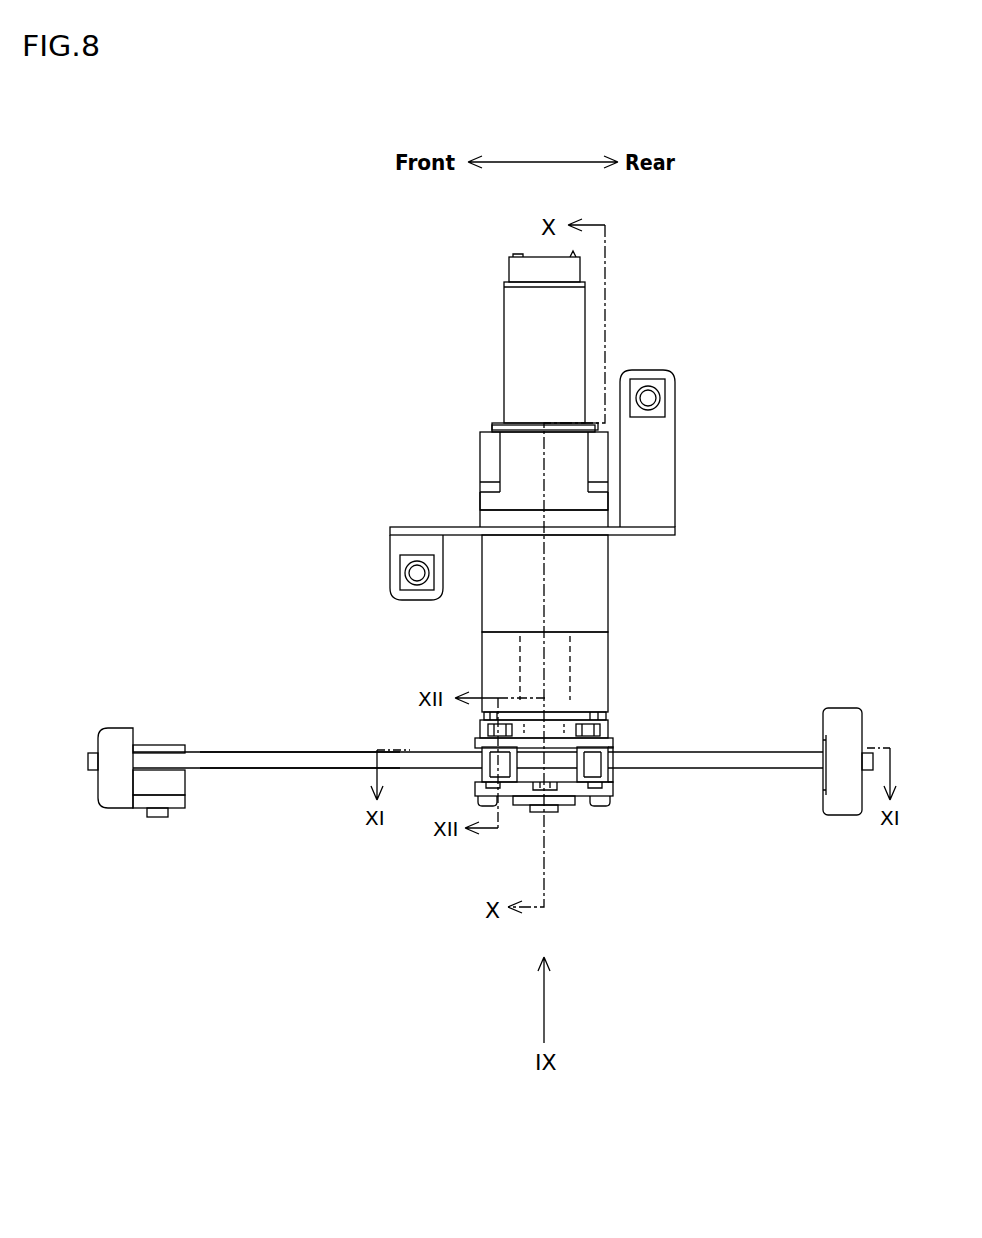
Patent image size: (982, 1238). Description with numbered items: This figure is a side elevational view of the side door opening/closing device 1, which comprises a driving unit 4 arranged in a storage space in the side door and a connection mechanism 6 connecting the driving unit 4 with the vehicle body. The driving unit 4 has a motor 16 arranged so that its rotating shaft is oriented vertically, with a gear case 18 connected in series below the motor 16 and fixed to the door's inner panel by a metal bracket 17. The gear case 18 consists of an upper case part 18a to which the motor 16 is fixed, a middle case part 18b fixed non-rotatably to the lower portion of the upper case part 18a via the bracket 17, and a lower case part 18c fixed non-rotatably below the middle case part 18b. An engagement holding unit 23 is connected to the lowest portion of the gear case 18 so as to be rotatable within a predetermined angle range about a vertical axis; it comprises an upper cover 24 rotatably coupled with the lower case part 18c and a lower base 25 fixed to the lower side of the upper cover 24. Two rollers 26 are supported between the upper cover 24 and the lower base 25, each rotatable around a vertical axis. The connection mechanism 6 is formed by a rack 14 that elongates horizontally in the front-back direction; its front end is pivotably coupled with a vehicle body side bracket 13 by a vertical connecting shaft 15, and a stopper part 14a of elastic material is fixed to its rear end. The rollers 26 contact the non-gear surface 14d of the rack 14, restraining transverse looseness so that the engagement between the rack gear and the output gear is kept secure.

The side door opening/closing device 1 is at (723, 635).
The driving unit 4 is at (641, 325).
The connection mechanism 6 is at (335, 769).
The vehicle body side bracket 13 is at (143, 812).
The rack 14 is at (255, 751).
The stopper part 14a is at (843, 815).
The non-gear surface 14d is at (236, 769).
The connecting shaft 15 is at (168, 742).
The motor 16 is at (504, 327).
The bracket 17 is at (677, 488).
The gear case 18 is at (480, 466).
The upper case part 18a is at (480, 502).
The middle case part 18b is at (608, 580).
The lower case part 18c is at (608, 663).
The engagement holding unit 23 is at (587, 810).
The upper cover 24 is at (616, 740).
The lower base 25 is at (612, 783).
The rollers 26 is at (492, 773).